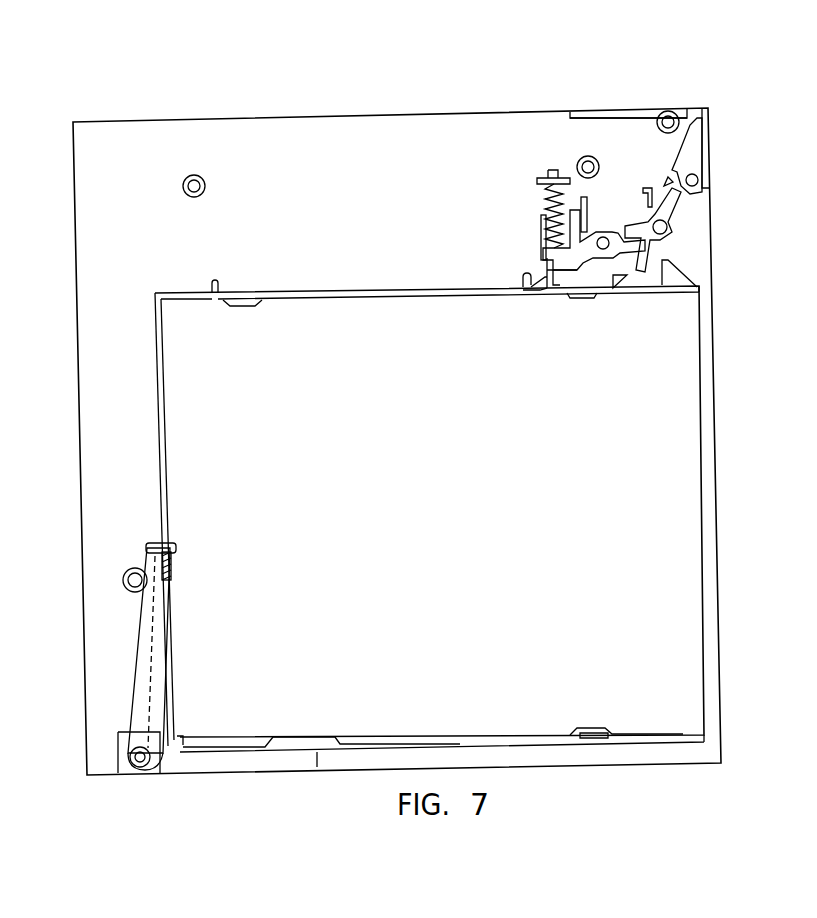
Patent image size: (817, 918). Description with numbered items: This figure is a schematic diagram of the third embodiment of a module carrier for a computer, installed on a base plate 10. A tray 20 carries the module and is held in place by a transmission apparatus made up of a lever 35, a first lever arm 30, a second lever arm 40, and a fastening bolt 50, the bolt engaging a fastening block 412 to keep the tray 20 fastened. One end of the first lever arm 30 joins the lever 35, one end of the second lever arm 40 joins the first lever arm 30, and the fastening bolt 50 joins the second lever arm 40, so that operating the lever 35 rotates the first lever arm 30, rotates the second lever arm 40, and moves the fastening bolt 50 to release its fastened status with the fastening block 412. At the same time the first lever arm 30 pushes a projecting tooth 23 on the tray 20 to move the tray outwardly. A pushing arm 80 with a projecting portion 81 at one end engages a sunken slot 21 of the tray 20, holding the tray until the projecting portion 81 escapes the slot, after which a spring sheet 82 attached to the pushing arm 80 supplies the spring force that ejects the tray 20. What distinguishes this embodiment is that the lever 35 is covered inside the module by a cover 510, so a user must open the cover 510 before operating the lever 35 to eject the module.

The base plate 10 is at (334, 155).
The tray 20 is at (665, 652).
The sunken slot 21 is at (172, 550).
The projecting tooth 23 is at (680, 284).
The first lever arm 30 is at (680, 240).
The lever 35 is at (697, 163).
The second lever arm 40 is at (606, 268).
The fastening bolt 50 is at (578, 192).
The pushing arm 80 is at (135, 700).
The projecting portion 81 is at (148, 547).
The spring sheet 82 is at (160, 768).
The fastening block 412 is at (540, 291).
The cover 510 is at (710, 130).